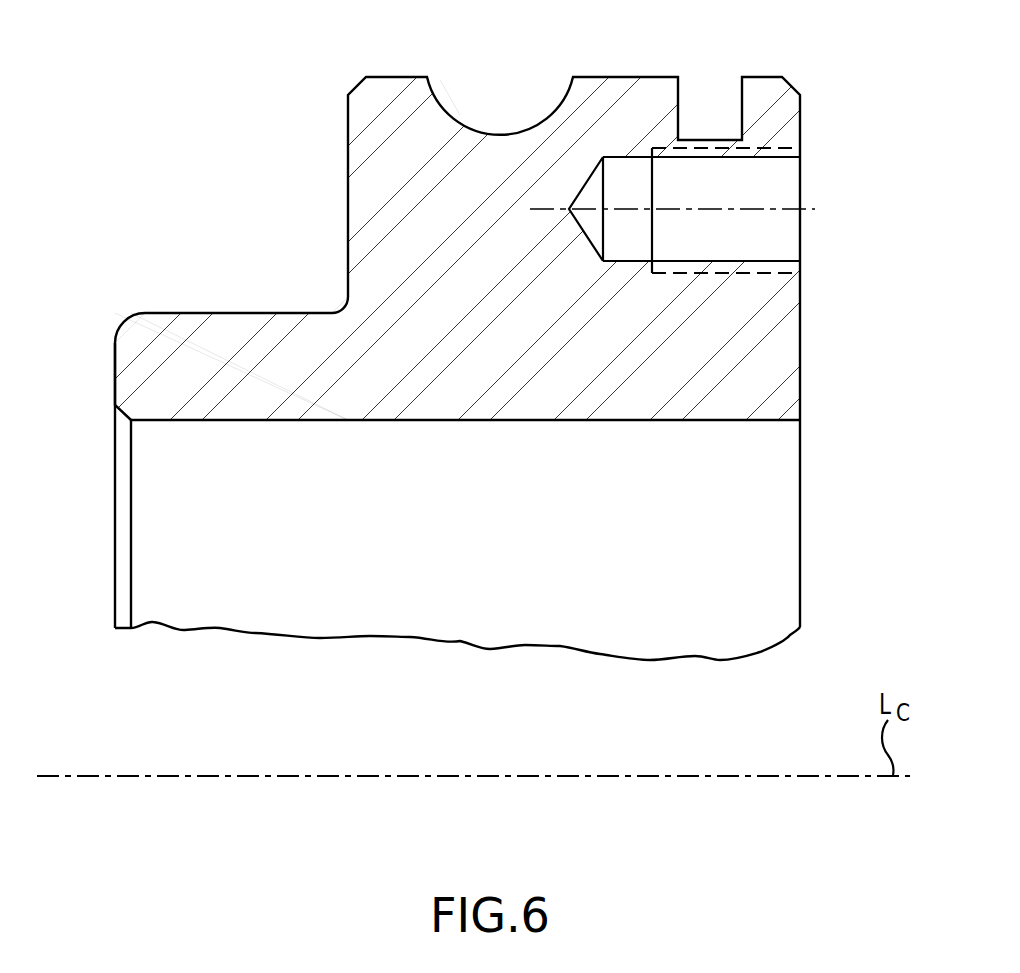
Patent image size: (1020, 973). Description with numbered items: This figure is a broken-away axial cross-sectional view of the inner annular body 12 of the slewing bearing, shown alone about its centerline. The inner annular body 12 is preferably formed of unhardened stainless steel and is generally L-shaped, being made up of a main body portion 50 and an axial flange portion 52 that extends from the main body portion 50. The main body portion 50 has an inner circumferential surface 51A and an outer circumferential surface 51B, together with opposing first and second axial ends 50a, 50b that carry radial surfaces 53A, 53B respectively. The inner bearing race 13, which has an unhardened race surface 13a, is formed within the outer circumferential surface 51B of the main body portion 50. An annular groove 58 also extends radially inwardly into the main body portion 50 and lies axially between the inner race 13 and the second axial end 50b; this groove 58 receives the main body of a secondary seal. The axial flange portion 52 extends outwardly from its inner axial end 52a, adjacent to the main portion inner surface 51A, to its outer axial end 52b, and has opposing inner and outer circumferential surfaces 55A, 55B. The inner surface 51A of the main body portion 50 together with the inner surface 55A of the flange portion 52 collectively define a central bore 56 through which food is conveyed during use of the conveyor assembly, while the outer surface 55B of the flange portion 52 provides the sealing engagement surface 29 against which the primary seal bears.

The inner annular body 12 is at (174, 70).
The inner bearing race 13 is at (537, 100).
The race surface 13a is at (455, 113).
The sealing engagement surface 29 is at (208, 300).
The main body portion 50 is at (848, 290).
The first axial end 50a is at (347, 130).
The second axial end 50b is at (800, 347).
The inner circumferential surface 51A is at (530, 420).
The outer circumferential surface 51B is at (625, 77).
The axial flange portion 52 is at (142, 280).
The inner axial end 52a is at (380, 375).
The outer axial end 52b is at (130, 366).
The radial surface 53A is at (347, 185).
The radial surface 53B is at (800, 126).
The inner circumferential surface 55A is at (216, 420).
The outer circumferential surface 55B is at (247, 312).
The central bore 56 is at (753, 537).
The annular groove 58 is at (715, 108).